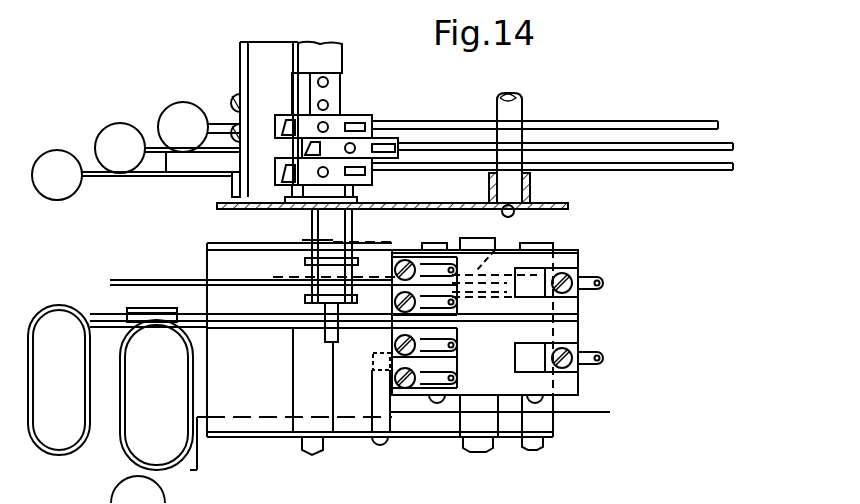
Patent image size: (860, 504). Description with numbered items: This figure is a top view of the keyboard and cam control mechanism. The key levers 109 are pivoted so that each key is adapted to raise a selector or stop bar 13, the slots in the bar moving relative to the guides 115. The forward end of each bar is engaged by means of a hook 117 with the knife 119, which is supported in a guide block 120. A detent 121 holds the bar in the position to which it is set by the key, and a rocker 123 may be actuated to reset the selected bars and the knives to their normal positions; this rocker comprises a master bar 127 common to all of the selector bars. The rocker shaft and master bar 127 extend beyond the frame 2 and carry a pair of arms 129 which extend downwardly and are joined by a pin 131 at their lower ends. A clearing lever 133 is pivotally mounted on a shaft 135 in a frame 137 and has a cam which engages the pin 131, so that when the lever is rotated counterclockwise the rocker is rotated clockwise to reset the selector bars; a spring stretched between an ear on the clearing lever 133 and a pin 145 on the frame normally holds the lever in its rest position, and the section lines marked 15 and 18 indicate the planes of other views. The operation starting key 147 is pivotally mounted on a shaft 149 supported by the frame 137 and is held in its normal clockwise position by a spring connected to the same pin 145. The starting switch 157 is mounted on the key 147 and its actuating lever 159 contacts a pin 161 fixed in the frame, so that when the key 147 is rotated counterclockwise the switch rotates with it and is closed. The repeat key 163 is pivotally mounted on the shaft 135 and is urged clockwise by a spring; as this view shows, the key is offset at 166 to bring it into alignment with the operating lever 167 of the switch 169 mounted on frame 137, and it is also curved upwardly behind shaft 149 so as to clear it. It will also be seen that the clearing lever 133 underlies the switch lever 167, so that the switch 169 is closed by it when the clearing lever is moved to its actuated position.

The frame 2 is at (538, 209).
The selector or stop bar 13 is at (597, 170).
The section line 15 is at (120, 470).
The section line 18 is at (217, 200).
The key levers 109 is at (162, 172).
The guides 115 is at (522, 95).
The hook 117 is at (356, 118).
The knife 119 is at (338, 118).
The guide block 120 is at (322, 53).
The detent 121 is at (330, 104).
The rocker 123 is at (357, 193).
The master bar 127 is at (306, 238).
The arms 129 is at (350, 262).
The pin 131 is at (338, 341).
The clearing lever 133 is at (112, 283).
The shaft 135 is at (303, 445).
The frame 137 is at (236, 440).
The pin 145 is at (537, 440).
The operation starting key 147 is at (225, 333).
The shaft 149 is at (487, 443).
The starting switch 157 is at (567, 338).
The actuating lever 159 is at (373, 362).
The pin 161 is at (380, 388).
The repeat key 163 is at (214, 314).
The offset 166 is at (457, 292).
The operating lever 167 is at (496, 247).
The switch 169 is at (562, 258).